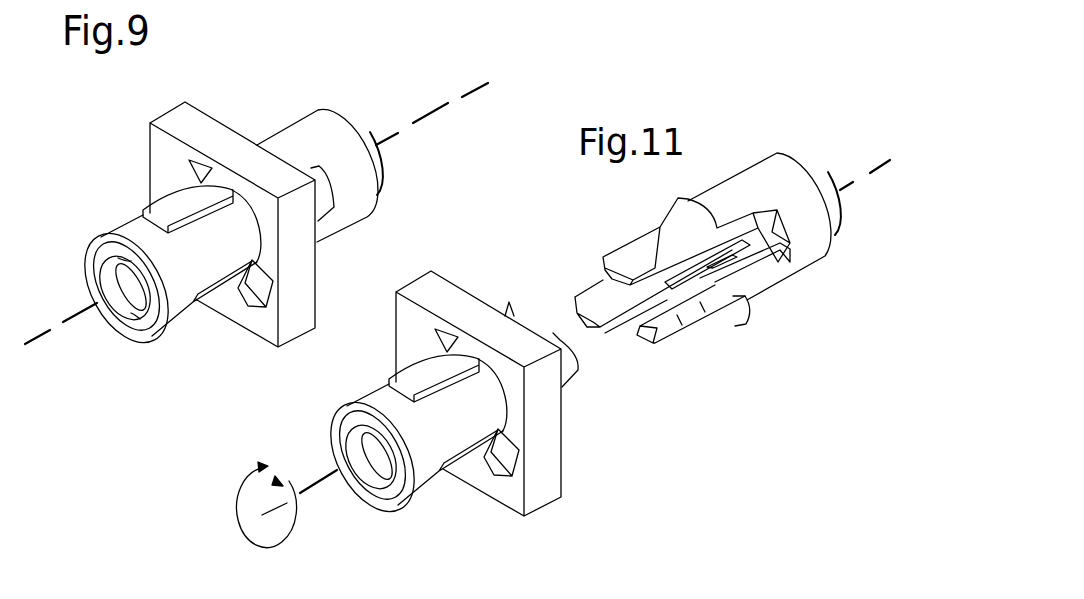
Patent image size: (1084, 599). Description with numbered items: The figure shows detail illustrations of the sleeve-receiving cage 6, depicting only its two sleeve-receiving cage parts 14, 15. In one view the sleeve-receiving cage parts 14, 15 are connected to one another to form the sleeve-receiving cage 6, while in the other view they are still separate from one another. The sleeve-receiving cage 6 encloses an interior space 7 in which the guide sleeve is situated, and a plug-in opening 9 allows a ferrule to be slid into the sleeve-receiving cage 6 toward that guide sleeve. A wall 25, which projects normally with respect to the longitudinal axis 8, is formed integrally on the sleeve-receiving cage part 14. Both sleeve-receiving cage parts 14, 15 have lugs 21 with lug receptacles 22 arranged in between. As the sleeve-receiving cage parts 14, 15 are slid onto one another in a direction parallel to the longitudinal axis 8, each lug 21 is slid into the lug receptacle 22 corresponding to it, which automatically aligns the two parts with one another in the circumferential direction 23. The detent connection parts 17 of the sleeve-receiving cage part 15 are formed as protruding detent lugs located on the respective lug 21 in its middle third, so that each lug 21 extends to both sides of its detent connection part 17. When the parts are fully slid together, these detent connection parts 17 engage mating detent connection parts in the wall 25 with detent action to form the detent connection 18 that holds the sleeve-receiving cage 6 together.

In FIG. 9, the sleeve-receiving cage 6 is at (225, 270).
In FIG. 9, the interior space 7 is at (136, 301).
In FIG. 9, the longitudinal axis 8 is at (77, 317).
In FIG. 9, the plug-in opening 9 is at (114, 306).
In FIG. 9, the sleeve-receiving cage part 14 is at (180, 309).
In FIG. 9, the sleeve-receiving cage part 15 is at (337, 133).
In FIG. 11, the sleeve-receiving cage part 15 is at (795, 177).
In FIG. 11, the detent connection part 17 is at (683, 208).
In FIG. 9, the detent connection 18 is at (222, 170).
In FIG. 11, the lug 21 is at (595, 264).
In FIG. 9, the lug receptacle 22 is at (446, 355).
In FIG. 11, the lug receptacle 22 is at (729, 294).
In FIG. 9, the circumferential direction 23 is at (238, 488).
In FIG. 9, the wall 25 is at (298, 277).